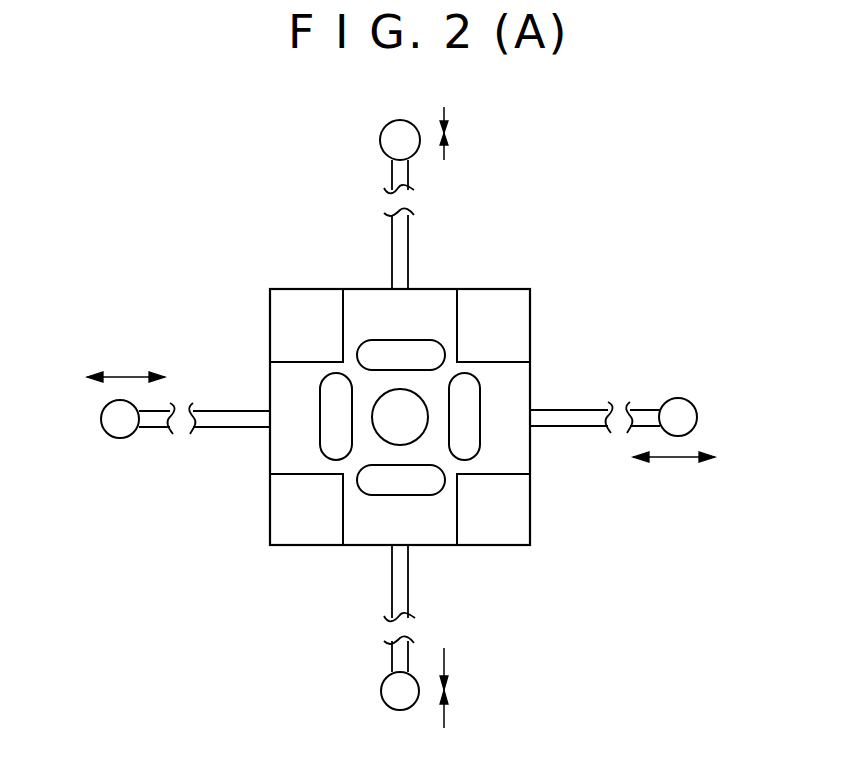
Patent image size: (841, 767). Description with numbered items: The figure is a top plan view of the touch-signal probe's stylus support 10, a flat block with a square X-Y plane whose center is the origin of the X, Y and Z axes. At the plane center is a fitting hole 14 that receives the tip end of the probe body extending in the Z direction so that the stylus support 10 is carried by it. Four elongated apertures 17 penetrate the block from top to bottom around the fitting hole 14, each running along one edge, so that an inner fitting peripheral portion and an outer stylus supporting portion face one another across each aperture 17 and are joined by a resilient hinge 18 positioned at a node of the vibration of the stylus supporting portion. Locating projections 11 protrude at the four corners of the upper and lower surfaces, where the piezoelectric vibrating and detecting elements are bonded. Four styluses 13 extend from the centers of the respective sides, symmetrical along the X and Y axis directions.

The stylus support 10 is at (531, 291).
The locating projection 11 is at (300, 312).
The stylus 13 is at (390, 172).
The fitting hole 14 is at (410, 405).
The elongated aperture 17 is at (385, 348).
The resilient hinge 18 is at (350, 370).